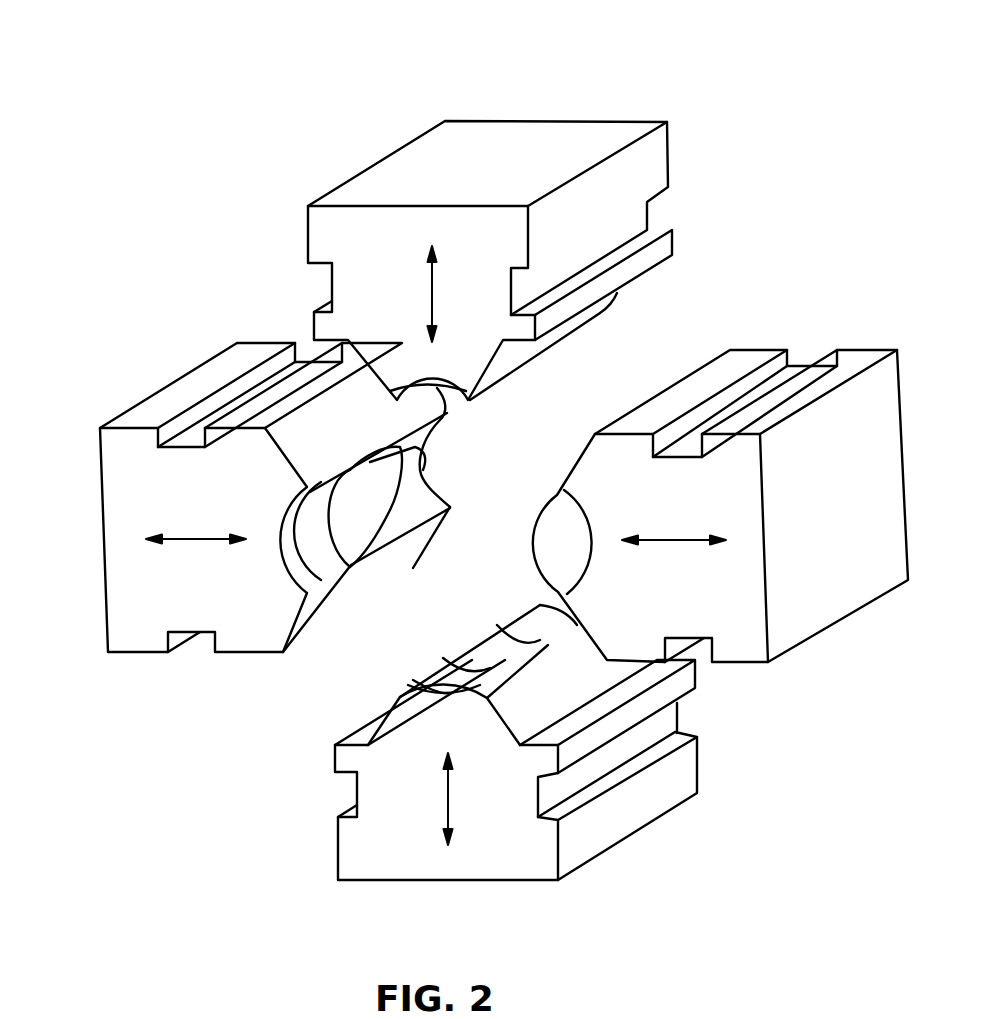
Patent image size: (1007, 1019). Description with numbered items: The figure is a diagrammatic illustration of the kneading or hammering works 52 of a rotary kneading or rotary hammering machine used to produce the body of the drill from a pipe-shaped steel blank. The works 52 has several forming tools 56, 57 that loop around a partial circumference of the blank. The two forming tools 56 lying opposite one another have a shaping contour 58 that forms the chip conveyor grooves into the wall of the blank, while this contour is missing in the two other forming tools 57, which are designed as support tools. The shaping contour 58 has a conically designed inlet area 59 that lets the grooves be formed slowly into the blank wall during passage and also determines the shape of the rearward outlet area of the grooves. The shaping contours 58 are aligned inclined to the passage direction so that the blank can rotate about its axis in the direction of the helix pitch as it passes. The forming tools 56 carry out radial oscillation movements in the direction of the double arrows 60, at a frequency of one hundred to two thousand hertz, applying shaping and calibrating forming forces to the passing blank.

The kneading or hammering works 52 is at (285, 715).
The forming tools 56 is at (128, 605).
The forming tools designed as support tools 57 is at (517, 155).
The shaping contour 58 is at (398, 473).
The conically designed inlet area 59 is at (362, 507).
The double arrows 60 is at (427, 297).